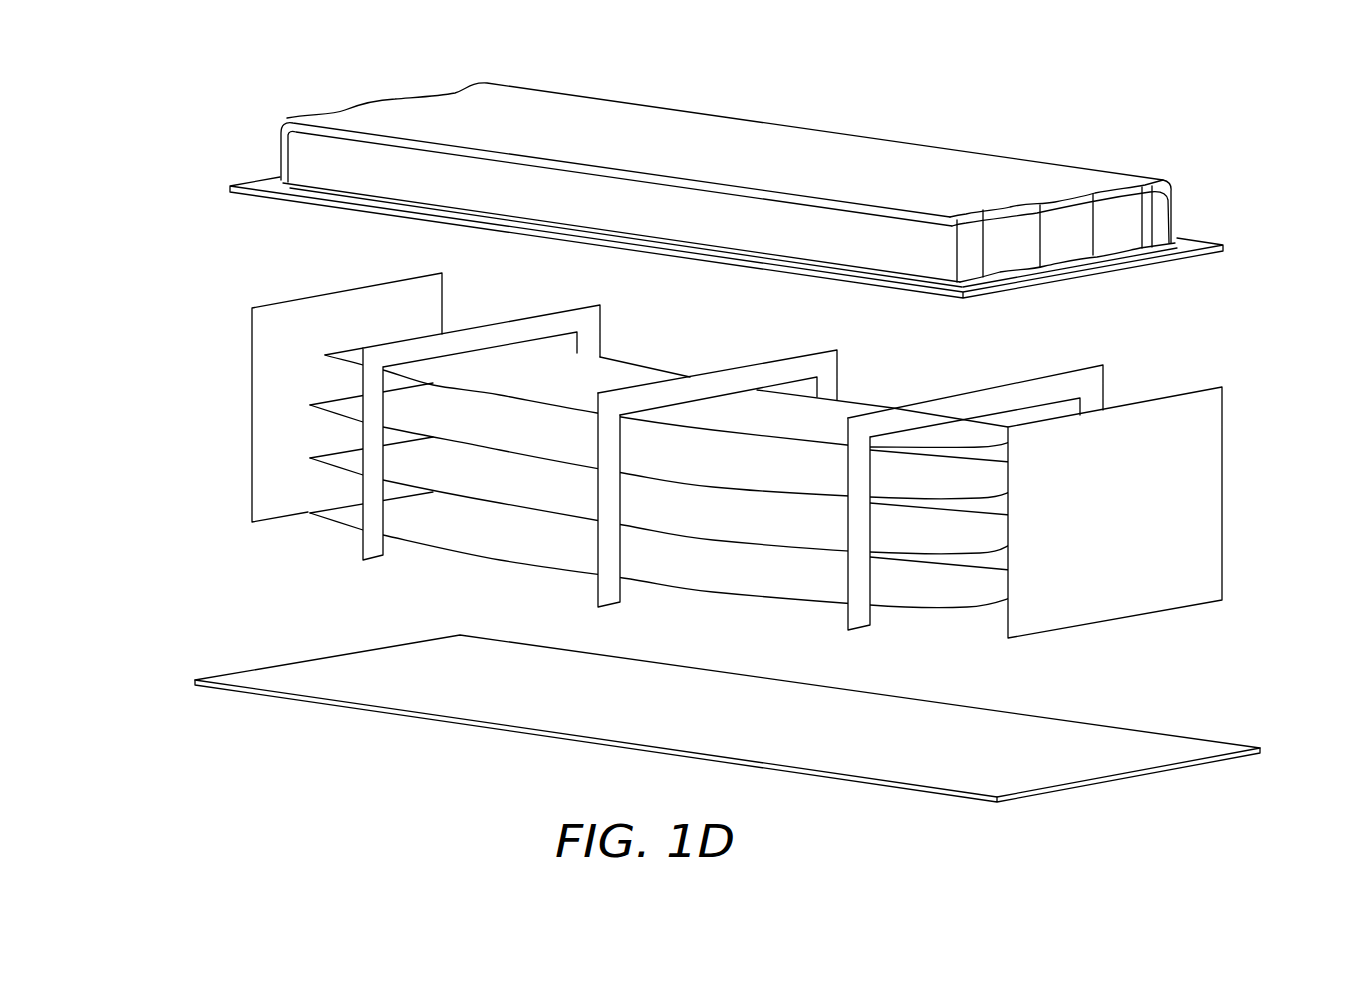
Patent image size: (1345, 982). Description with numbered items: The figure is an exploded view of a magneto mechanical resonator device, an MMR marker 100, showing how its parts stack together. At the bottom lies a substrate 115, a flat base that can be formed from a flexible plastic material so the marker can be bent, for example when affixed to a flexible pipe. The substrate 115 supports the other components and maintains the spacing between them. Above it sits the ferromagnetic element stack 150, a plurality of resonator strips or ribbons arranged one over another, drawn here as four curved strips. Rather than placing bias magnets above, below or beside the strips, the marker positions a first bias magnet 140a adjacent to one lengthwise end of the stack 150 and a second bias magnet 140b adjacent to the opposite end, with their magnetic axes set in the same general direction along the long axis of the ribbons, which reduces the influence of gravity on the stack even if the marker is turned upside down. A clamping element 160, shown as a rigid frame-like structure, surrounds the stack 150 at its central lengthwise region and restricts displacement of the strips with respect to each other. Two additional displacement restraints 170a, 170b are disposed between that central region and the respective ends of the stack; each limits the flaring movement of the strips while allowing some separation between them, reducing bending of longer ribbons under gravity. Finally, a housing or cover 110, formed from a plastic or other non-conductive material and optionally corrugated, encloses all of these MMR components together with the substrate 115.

The MMR marker 100 is at (1282, 778).
The housing or cover 110 is at (1115, 172).
The substrate 115 is at (1125, 745).
The bias magnet 140a is at (252, 327).
The bias magnet 140b is at (1208, 389).
The ferromagnetic element stack 150 is at (310, 514).
The clamping element 160 is at (838, 352).
The displacement restraint 170a is at (362, 542).
The displacement restraint 170b is at (863, 585).